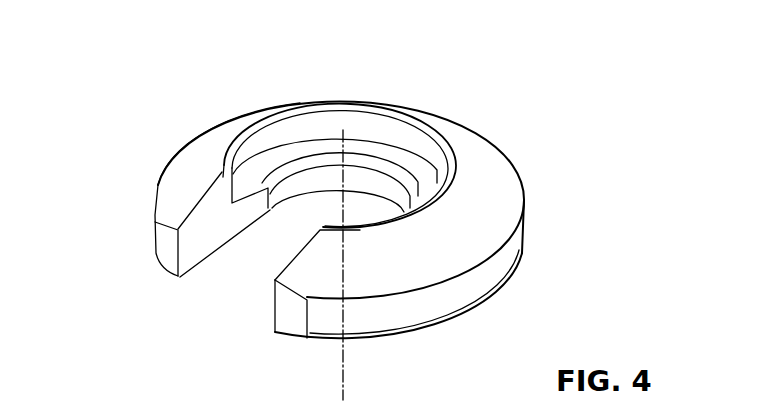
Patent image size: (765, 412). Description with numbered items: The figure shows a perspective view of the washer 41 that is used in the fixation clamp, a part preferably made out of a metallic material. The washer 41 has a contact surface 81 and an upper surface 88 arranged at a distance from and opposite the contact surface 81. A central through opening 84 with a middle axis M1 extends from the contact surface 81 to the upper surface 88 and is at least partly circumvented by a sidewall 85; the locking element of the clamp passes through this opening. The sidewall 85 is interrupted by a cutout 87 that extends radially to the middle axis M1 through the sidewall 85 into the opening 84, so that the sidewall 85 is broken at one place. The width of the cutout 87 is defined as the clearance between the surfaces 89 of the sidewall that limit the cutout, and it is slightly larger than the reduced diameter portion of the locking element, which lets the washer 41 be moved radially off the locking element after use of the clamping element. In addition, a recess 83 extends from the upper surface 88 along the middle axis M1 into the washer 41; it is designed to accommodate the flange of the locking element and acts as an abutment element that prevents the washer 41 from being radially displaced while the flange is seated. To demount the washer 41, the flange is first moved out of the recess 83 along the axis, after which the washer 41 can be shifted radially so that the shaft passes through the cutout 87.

The washer 41 is at (483, 164).
The contact surface 81 is at (208, 266).
The recess 83 is at (316, 121).
The central through opening 84 is at (373, 187).
The sidewall 85 is at (208, 218).
The cutout 87 is at (266, 279).
The upper surface 88 is at (227, 130).
The surfaces of the sidewall limiting the cutout 89 is at (198, 243).
The middle axis M1 is at (345, 353).